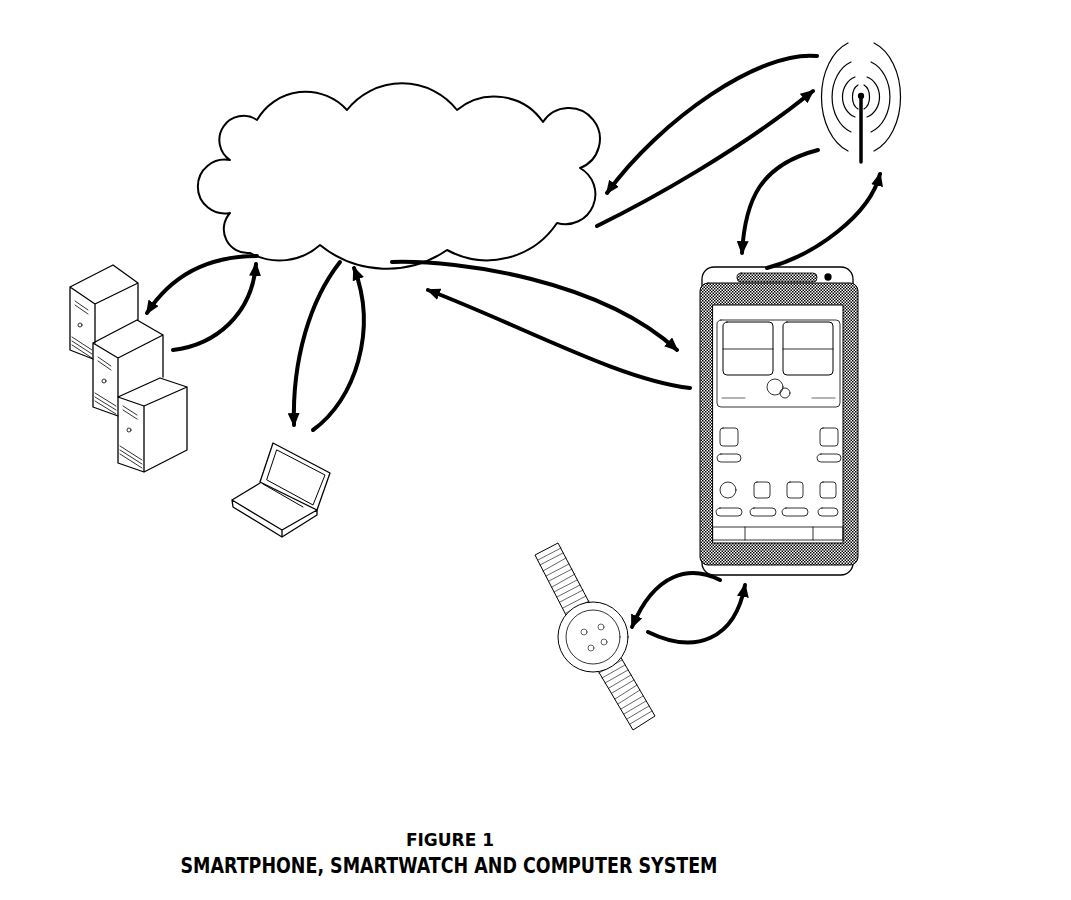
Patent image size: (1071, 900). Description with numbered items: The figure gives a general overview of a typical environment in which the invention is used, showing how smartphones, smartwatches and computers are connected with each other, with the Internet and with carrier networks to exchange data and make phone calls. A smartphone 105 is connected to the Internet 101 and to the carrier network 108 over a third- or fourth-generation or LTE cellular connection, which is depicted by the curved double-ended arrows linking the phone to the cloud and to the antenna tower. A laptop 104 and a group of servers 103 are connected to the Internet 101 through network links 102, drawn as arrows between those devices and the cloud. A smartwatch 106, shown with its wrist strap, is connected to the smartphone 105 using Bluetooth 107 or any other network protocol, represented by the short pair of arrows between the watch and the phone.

The Internet 101 is at (593, 168).
The network links 102 is at (217, 340).
The servers 103 is at (93, 413).
The laptop 104 is at (268, 538).
The smartphone 105 is at (700, 410).
The smartwatch 106 is at (567, 653).
The Bluetooth 107 is at (712, 648).
The carrier network 108 is at (833, 43).